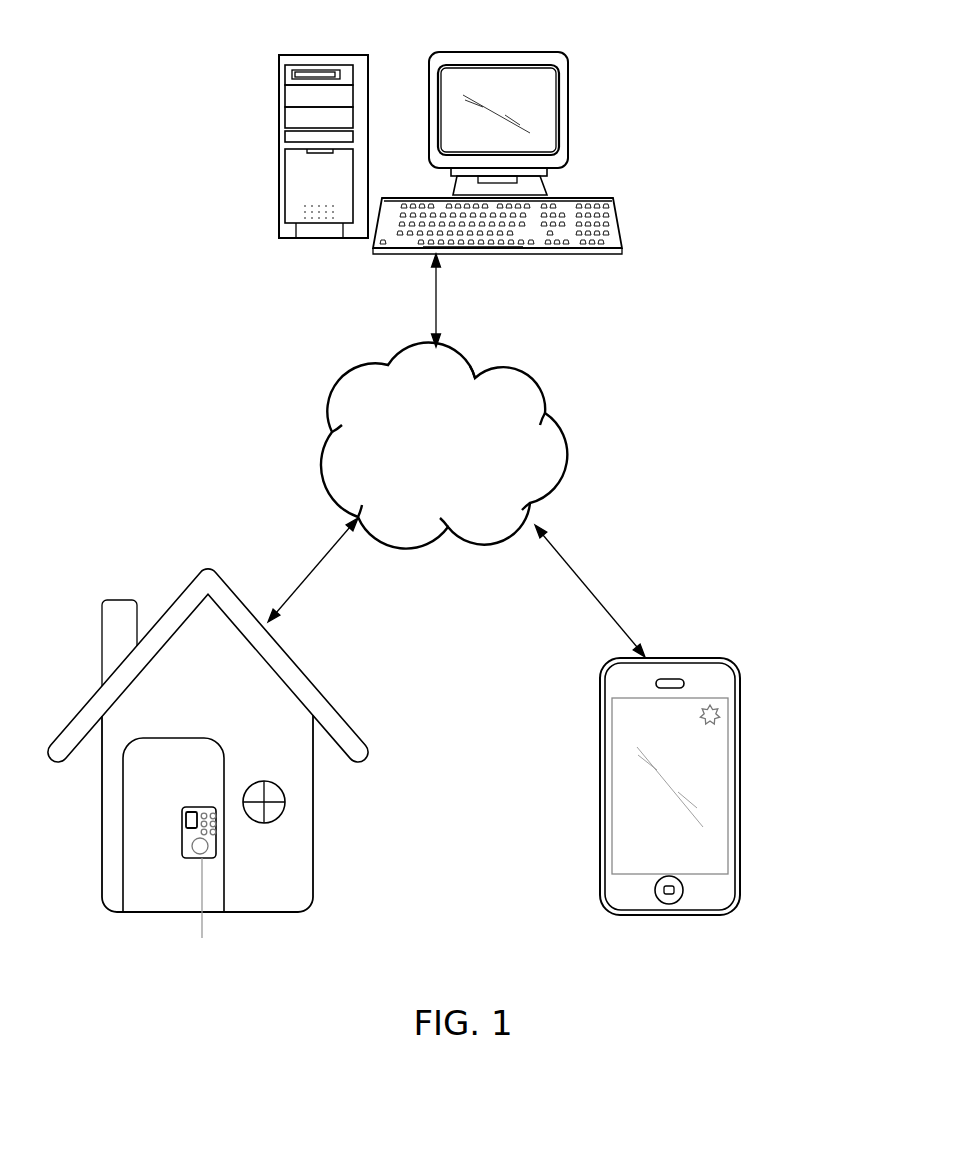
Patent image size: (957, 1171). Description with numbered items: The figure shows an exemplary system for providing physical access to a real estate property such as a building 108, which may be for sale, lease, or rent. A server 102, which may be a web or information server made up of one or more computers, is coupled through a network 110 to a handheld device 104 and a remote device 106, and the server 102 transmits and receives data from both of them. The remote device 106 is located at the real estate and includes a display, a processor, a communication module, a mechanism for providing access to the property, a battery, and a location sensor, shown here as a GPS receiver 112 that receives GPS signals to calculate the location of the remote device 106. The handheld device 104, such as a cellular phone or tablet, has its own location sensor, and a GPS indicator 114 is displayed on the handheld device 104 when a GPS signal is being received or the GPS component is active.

The server 102 is at (322, 53).
The handheld device 104 is at (705, 657).
The remote device 106 is at (217, 848).
The building 108 is at (313, 827).
The network 110 is at (492, 356).
The GPS receiver 112 is at (182, 817).
The GPS indicator 114 is at (716, 709).